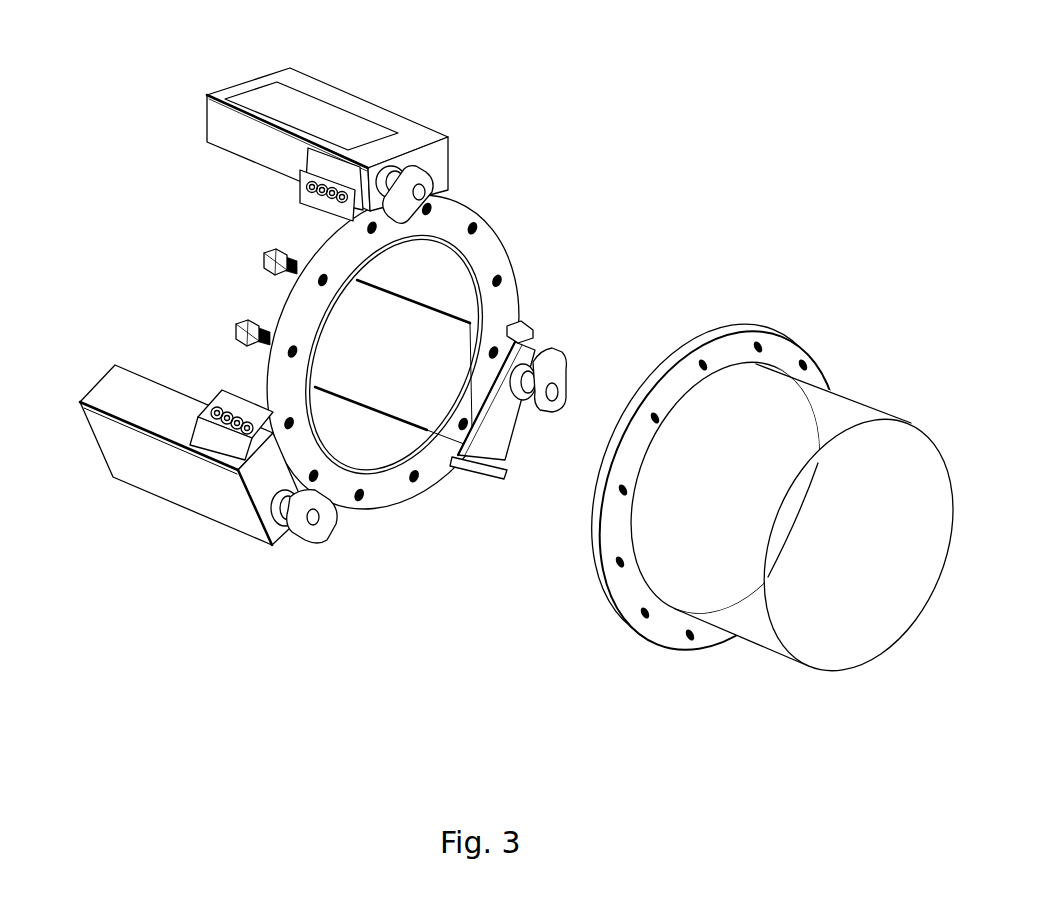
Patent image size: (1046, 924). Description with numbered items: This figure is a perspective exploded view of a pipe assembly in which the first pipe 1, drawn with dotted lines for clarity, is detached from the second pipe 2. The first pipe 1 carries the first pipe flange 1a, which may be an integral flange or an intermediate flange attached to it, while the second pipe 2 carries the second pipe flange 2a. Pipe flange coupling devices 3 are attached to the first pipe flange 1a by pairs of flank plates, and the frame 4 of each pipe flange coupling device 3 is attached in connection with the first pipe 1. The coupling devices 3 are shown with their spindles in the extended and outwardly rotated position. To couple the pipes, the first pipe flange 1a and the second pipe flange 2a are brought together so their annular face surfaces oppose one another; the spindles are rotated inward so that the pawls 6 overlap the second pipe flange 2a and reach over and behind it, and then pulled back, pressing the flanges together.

The first pipe 1 is at (204, 132).
The first pipe flange 1a is at (497, 233).
The second pipe 2 is at (878, 395).
The second pipe flange 2a is at (732, 324).
The pipe flange coupling device 3 is at (410, 65).
The frame 4 is at (42, 352).
The pawl 6 is at (552, 352).